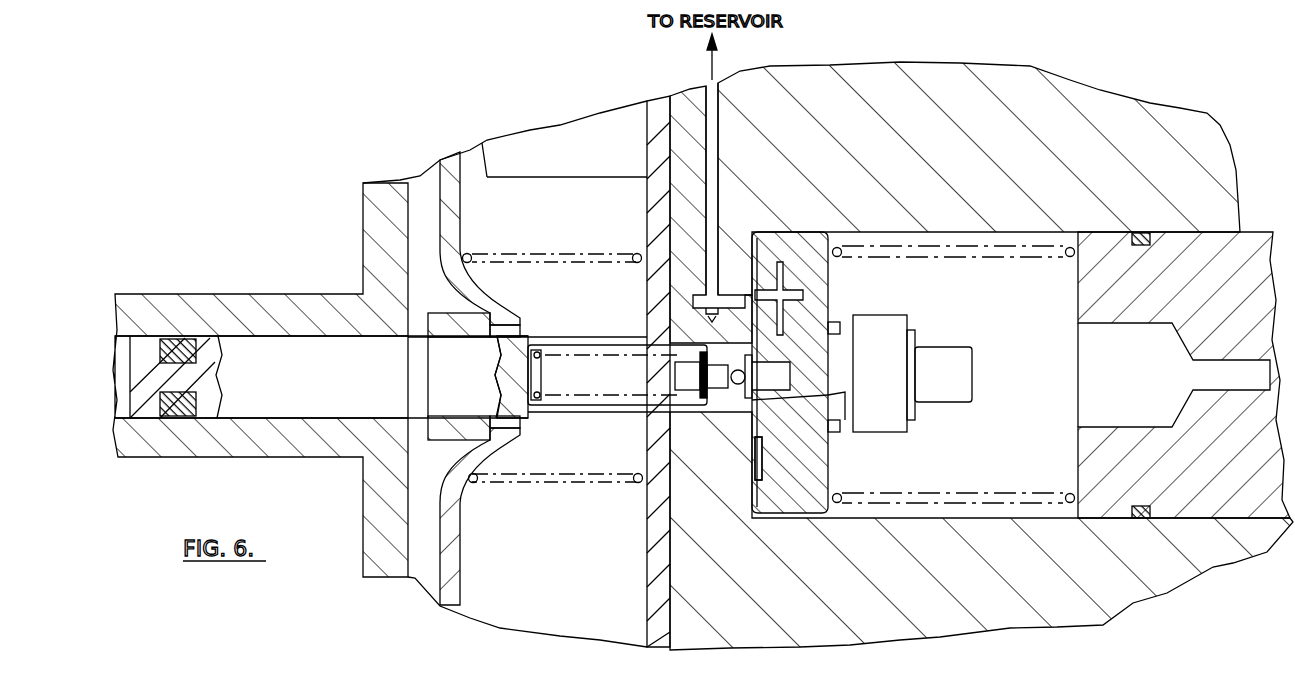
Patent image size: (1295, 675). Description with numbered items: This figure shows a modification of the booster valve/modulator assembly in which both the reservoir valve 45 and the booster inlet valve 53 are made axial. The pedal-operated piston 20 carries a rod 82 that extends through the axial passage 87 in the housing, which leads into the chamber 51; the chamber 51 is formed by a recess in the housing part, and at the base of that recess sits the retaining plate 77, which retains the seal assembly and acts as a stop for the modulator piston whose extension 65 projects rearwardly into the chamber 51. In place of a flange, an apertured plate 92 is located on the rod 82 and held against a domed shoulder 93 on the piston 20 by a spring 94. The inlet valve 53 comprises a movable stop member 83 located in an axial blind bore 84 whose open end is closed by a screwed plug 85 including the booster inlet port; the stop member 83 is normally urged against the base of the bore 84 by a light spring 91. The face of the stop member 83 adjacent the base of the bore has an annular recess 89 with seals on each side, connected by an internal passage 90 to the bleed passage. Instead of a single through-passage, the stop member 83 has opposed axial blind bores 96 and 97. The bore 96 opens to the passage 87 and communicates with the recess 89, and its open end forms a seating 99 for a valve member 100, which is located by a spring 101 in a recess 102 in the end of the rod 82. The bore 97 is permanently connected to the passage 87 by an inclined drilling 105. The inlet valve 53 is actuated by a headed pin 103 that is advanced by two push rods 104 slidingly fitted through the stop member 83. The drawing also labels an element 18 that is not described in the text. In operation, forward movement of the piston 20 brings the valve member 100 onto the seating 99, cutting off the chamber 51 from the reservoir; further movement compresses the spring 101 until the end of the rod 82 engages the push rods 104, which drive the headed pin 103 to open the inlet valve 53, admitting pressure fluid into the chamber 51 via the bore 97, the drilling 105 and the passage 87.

The piston 18 is at (789, 268).
The pedal-operated piston 20 is at (328, 390).
The reservoir valve 45 is at (713, 314).
The chamber 51 is at (572, 542).
The booster inlet valve 53 is at (920, 414).
The extension 65 is at (578, 161).
The retaining plate 77 is at (650, 571).
The rod 82 is at (603, 406).
The movable stop member 83 is at (790, 505).
The axial blind bore 84 is at (986, 518).
The screwed plug 85 is at (1115, 508).
The axial passage 87 is at (683, 420).
The annular recess 89 is at (755, 470).
The internal passage 90 is at (719, 148).
The light spring 91 is at (1066, 490).
The apertured plate 92 is at (450, 568).
The domed shoulder 93 is at (440, 323).
The spring 94 is at (545, 252).
The axial blind bore 96 is at (740, 396).
The axial blind bore 97 is at (860, 330).
The seating 99 is at (738, 369).
The valve member 100 is at (690, 375).
The spring 101 is at (538, 406).
The recess 102 is at (557, 368).
The headed pin 103 is at (835, 420).
The push rods 104 is at (834, 322).
The inclined drilling 105 is at (824, 460).